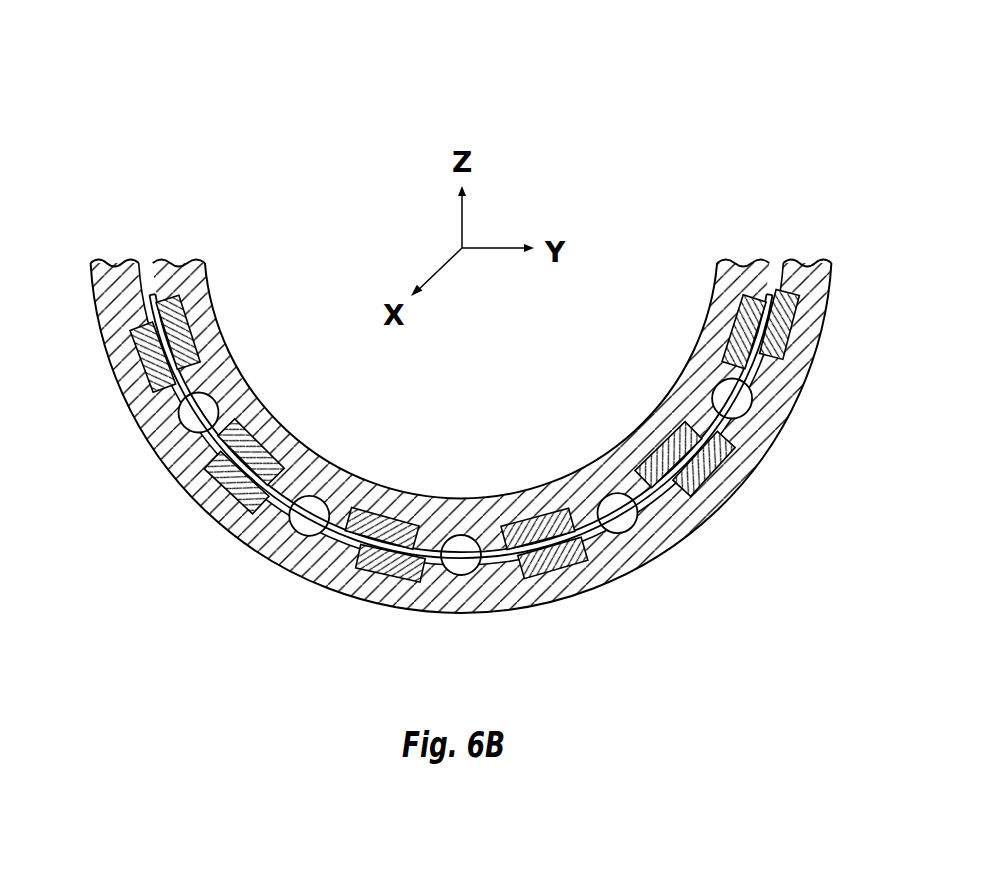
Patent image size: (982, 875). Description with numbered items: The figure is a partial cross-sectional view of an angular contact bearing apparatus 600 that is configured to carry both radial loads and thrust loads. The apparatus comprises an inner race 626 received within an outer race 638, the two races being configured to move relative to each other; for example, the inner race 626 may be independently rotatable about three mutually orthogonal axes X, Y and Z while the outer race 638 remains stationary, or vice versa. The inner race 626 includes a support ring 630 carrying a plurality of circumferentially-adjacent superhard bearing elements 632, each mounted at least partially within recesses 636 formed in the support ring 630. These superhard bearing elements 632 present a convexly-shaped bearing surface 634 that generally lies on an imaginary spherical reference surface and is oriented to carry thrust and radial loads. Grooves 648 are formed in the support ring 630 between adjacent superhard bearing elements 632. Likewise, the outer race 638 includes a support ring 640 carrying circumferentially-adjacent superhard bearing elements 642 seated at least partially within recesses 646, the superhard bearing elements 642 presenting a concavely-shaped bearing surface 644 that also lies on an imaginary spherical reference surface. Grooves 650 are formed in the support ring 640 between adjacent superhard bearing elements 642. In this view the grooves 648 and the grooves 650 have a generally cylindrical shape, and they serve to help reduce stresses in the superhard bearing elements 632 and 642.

The angular contact bearing apparatus 600 is at (133, 68).
The inner race 626 is at (180, 257).
The support ring 630 is at (722, 308).
The superhard bearing elements 632 is at (178, 290).
The convexly-shaped bearing surface 634 is at (156, 318).
The recesses 636 is at (188, 325).
The outer race 638 is at (113, 257).
The support ring 640 is at (802, 276).
The superhard bearing elements 642 is at (145, 340).
The concavely-shaped bearing surface 644 is at (197, 362).
The recesses 646 is at (147, 365).
The grooves 648 is at (200, 393).
The grooves 650 is at (157, 457).